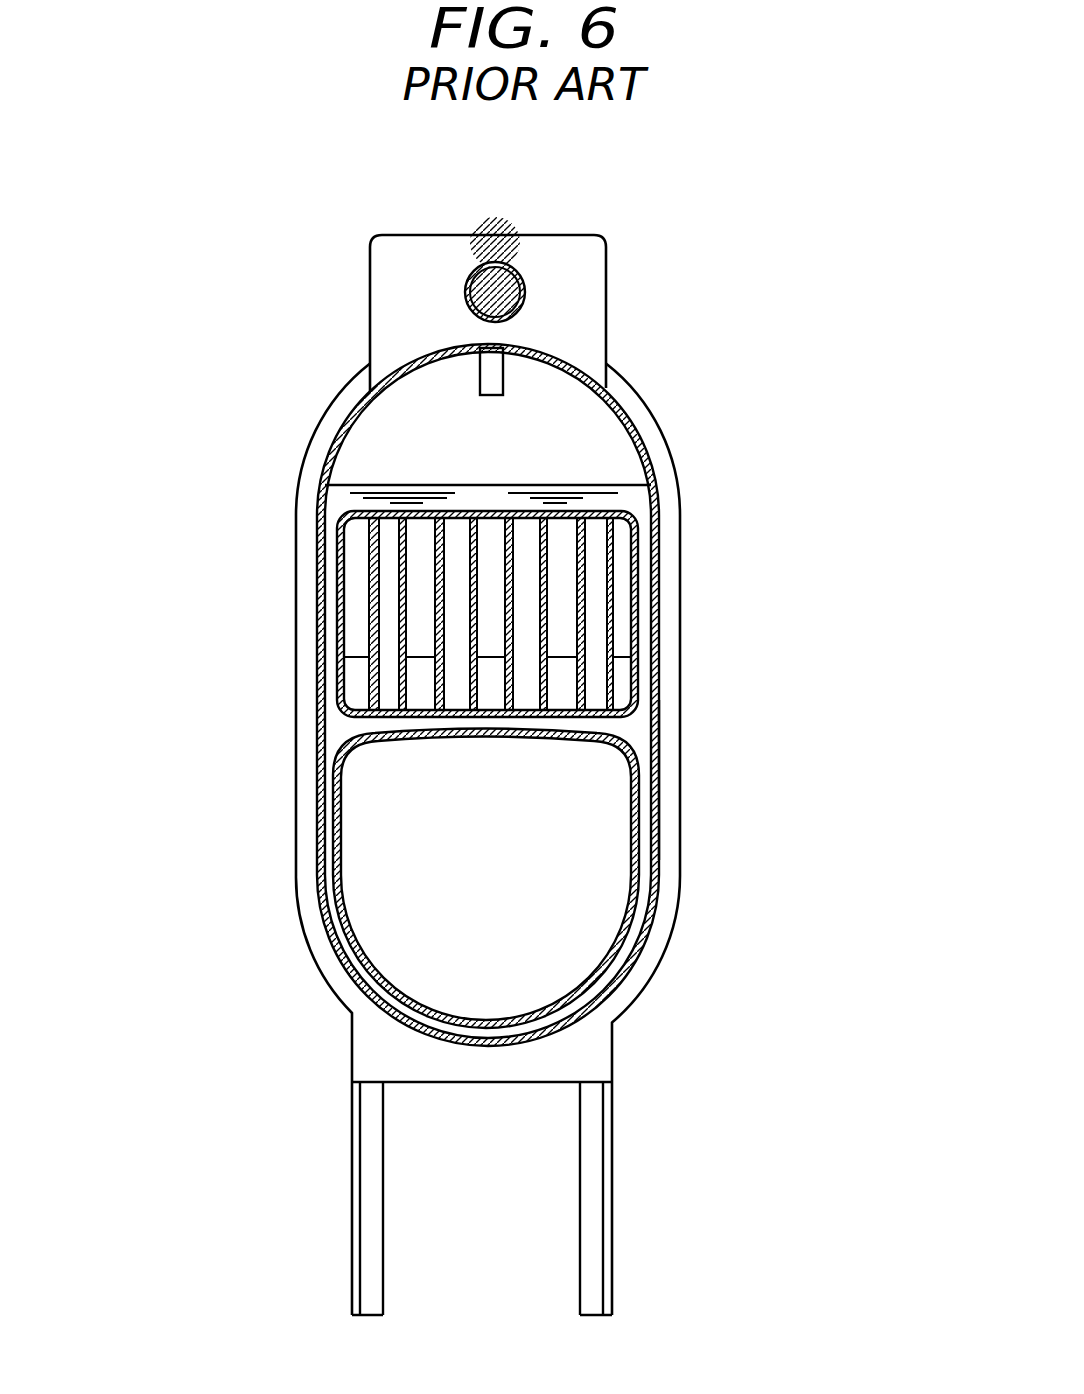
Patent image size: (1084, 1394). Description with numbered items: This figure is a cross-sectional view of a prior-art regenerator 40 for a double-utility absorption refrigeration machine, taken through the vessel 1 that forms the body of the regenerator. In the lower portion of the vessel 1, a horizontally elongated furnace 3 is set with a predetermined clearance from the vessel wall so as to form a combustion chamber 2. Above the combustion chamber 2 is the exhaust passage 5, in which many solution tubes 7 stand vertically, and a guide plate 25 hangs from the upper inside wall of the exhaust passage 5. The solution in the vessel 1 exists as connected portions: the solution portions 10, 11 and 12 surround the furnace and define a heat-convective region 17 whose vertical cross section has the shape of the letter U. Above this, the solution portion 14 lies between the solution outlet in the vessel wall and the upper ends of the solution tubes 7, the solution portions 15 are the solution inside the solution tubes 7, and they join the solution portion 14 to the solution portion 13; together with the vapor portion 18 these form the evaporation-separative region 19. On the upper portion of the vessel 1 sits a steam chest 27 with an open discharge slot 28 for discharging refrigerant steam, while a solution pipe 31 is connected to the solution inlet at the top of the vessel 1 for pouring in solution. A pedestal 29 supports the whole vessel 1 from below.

The vessel 1 is at (667, 951).
The combustion chamber 2 is at (390, 893).
The furnace 3 is at (641, 896).
The exhaust passage 5 is at (355, 678).
The solution tubes 7 is at (467, 533).
The solution portion 10 is at (330, 818).
The solution portion 11 is at (635, 837).
The solution portion 12 is at (490, 1033).
The solution portion 13 is at (478, 727).
The solution portion 14 is at (477, 487).
The solution portions 15 is at (388, 528).
The heat-convective region 17 is at (643, 780).
The vapor portion 18 is at (590, 417).
The evaporation-separative region 19 is at (607, 475).
The guide plate 25 is at (616, 555).
The steam chest 27 is at (608, 300).
The discharge slot 28 is at (502, 287).
The pedestal 29 is at (372, 1183).
The solution pipe 31 is at (490, 375).
The regenerator 40 is at (506, 727).